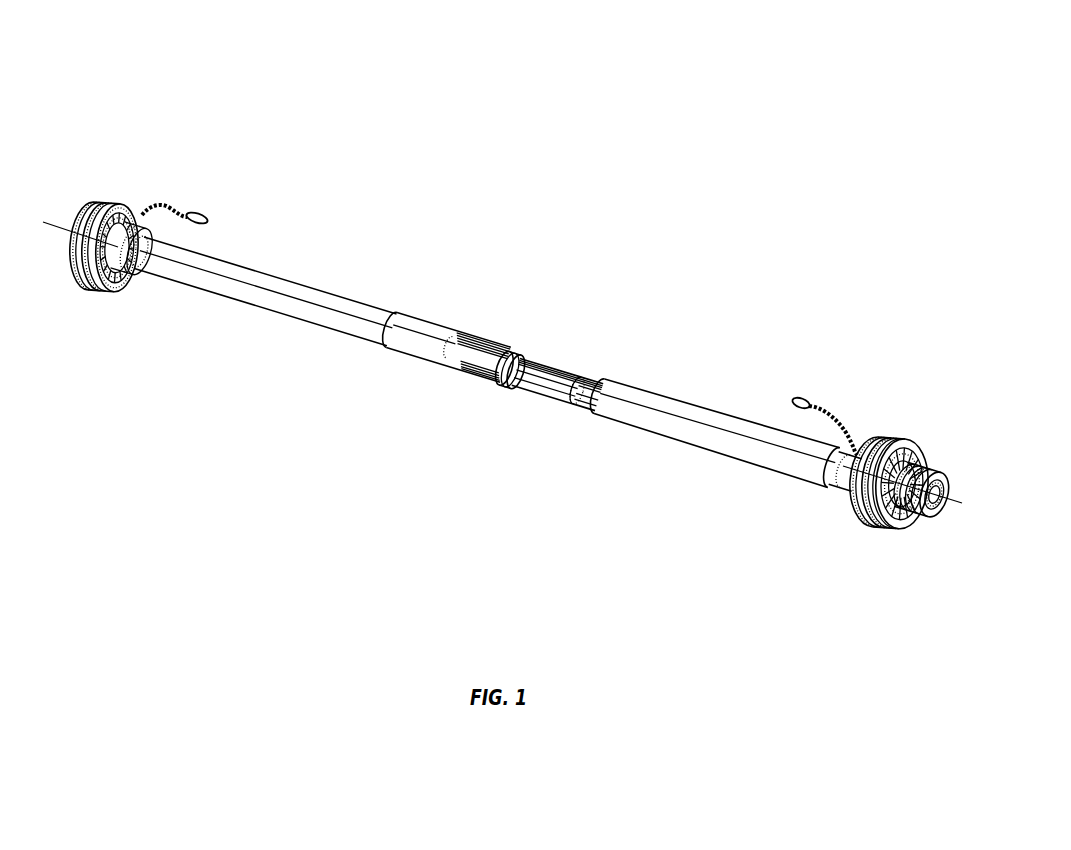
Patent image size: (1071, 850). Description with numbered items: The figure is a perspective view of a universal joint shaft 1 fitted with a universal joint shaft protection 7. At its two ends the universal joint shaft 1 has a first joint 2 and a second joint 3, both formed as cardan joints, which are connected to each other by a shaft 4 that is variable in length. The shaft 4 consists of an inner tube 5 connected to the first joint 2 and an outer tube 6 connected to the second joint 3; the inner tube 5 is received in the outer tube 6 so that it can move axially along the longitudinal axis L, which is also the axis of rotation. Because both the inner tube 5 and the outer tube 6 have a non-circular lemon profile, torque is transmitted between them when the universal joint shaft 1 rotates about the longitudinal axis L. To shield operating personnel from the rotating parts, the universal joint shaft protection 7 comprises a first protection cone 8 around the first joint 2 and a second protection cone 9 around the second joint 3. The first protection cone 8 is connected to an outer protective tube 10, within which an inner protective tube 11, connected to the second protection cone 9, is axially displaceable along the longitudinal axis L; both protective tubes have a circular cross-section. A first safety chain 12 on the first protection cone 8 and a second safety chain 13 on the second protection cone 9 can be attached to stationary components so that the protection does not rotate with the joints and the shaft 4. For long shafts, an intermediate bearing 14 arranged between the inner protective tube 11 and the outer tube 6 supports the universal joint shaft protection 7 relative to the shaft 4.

The universal joint shaft 1 is at (548, 122).
The first joint 2 is at (900, 419).
The second joint 3 is at (120, 186).
The shaft 4 is at (555, 350).
The inner tube 5 is at (578, 393).
The outer tube 6 is at (537, 384).
The universal joint shaft protection 7 is at (696, 391).
The first protection cone 8 is at (103, 200).
The second protection cone 9 is at (905, 440).
The outer protective tube 10 is at (431, 320).
The inner protective tube 11 is at (326, 292).
The first safety chain 12 is at (833, 410).
The second safety chain 13 is at (190, 207).
The intermediate bearing 14 is at (520, 350).
The longitudinal axis L is at (62, 225).